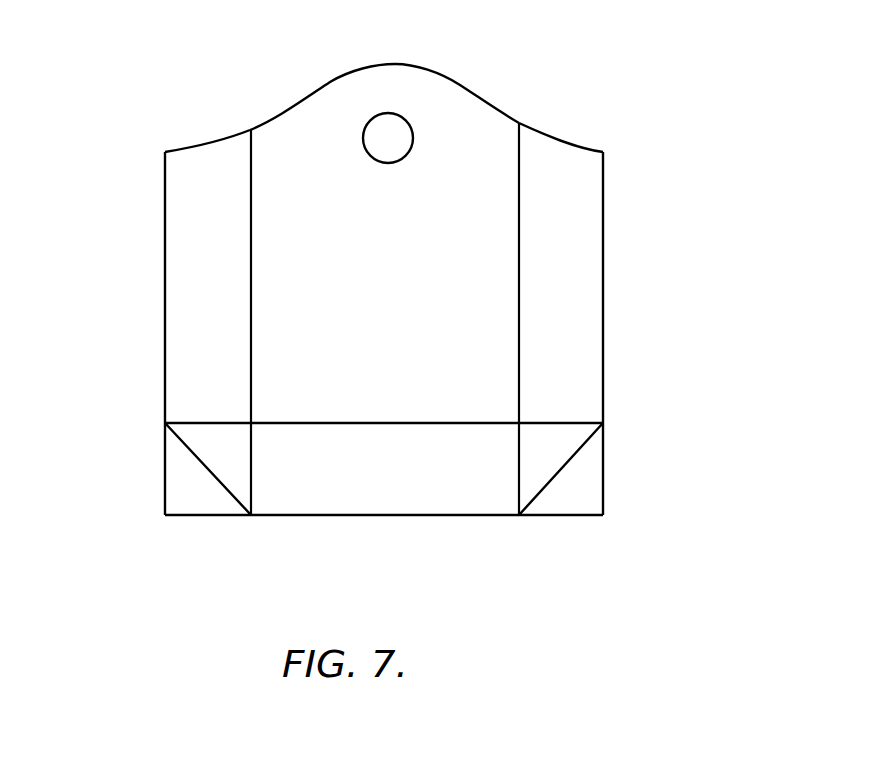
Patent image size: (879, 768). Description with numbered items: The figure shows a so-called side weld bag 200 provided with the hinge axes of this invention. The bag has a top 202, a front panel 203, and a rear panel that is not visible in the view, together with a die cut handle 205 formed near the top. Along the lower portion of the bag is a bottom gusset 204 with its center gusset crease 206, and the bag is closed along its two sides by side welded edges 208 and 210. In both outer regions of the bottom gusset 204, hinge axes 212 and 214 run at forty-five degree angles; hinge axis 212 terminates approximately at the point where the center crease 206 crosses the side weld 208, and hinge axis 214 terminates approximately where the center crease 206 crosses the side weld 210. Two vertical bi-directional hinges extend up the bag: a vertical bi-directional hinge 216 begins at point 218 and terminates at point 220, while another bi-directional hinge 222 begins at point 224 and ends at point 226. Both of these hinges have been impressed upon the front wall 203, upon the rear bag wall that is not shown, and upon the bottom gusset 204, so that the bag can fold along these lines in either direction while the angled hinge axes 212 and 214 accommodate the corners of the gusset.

The side weld bag 200 is at (622, 210).
The top 202 is at (463, 80).
The front panel 203 is at (413, 323).
The bottom gusset 204 is at (337, 488).
The die cut handle 205 is at (393, 113).
The center gusset crease 206 is at (443, 424).
The side welded edge 208 is at (165, 318).
The side welded edge 210 is at (603, 337).
The hinge axis 212 is at (197, 458).
The hinge axis 214 is at (575, 453).
The vertical bi-directional hinge 216 is at (250, 262).
The beginning point of hinge 218 is at (250, 517).
The terminating point of hinge 220 is at (250, 128).
The bi-directional hinge 222 is at (519, 284).
The beginning point of hinge 224 is at (520, 517).
The end point of hinge 226 is at (520, 124).